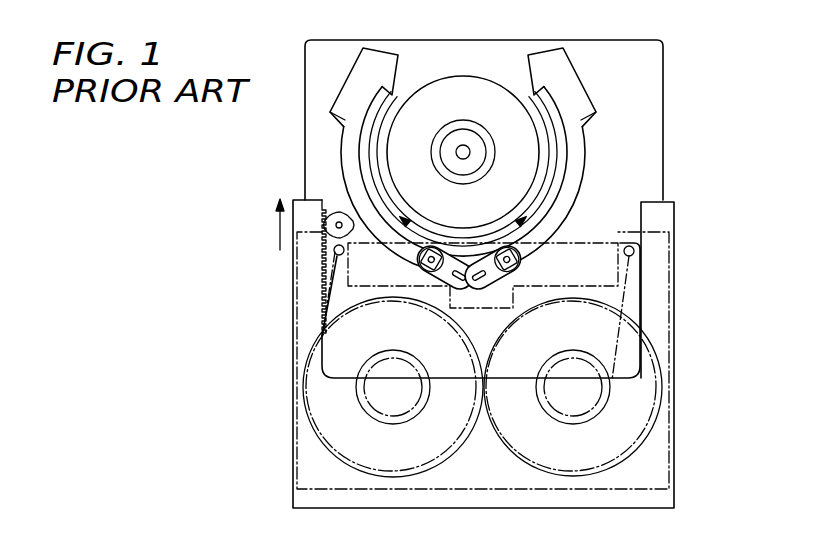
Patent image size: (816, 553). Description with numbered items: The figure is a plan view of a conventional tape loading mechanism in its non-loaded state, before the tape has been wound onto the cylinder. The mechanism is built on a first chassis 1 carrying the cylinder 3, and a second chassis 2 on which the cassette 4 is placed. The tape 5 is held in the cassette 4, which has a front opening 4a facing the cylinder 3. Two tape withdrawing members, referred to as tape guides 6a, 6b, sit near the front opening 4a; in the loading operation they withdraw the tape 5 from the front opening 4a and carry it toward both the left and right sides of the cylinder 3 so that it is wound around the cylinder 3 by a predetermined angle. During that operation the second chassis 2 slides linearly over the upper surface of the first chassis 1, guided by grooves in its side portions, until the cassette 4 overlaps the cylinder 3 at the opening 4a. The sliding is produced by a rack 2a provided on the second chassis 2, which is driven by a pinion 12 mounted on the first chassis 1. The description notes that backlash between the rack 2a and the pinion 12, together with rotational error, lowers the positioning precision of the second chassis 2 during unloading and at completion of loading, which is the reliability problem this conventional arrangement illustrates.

The first chassis 1 is at (663, 88).
The second chassis 2 is at (665, 498).
The rack 2a is at (321, 268).
The cylinder 3 is at (463, 75).
The cassette 4 is at (660, 458).
The front opening 4a is at (580, 272).
The tape 5 is at (598, 241).
The tape withdrawing guide 6a is at (432, 250).
The tape withdrawing guide 6b is at (506, 250).
The pinion 12 is at (339, 211).